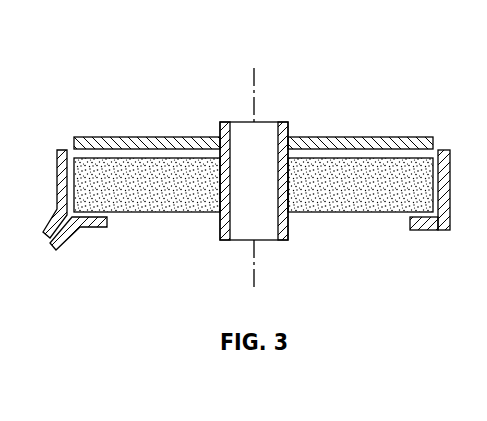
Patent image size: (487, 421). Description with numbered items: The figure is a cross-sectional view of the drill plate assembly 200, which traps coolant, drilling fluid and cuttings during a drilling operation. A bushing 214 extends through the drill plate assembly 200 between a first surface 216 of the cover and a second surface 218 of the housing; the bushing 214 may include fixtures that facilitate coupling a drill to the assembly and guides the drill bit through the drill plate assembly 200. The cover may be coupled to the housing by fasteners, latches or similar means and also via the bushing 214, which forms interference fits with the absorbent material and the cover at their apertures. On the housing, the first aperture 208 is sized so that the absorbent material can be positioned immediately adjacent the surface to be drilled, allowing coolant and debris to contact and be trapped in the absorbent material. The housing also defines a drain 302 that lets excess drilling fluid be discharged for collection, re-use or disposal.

The drill plate assembly 200 is at (76, 47).
The first surface of the cover 216 is at (114, 137).
The bushing 214 is at (283, 122).
The first aperture 208 is at (409, 228).
The second surface of the housing 218 is at (440, 231).
The drain 302 is at (58, 247).